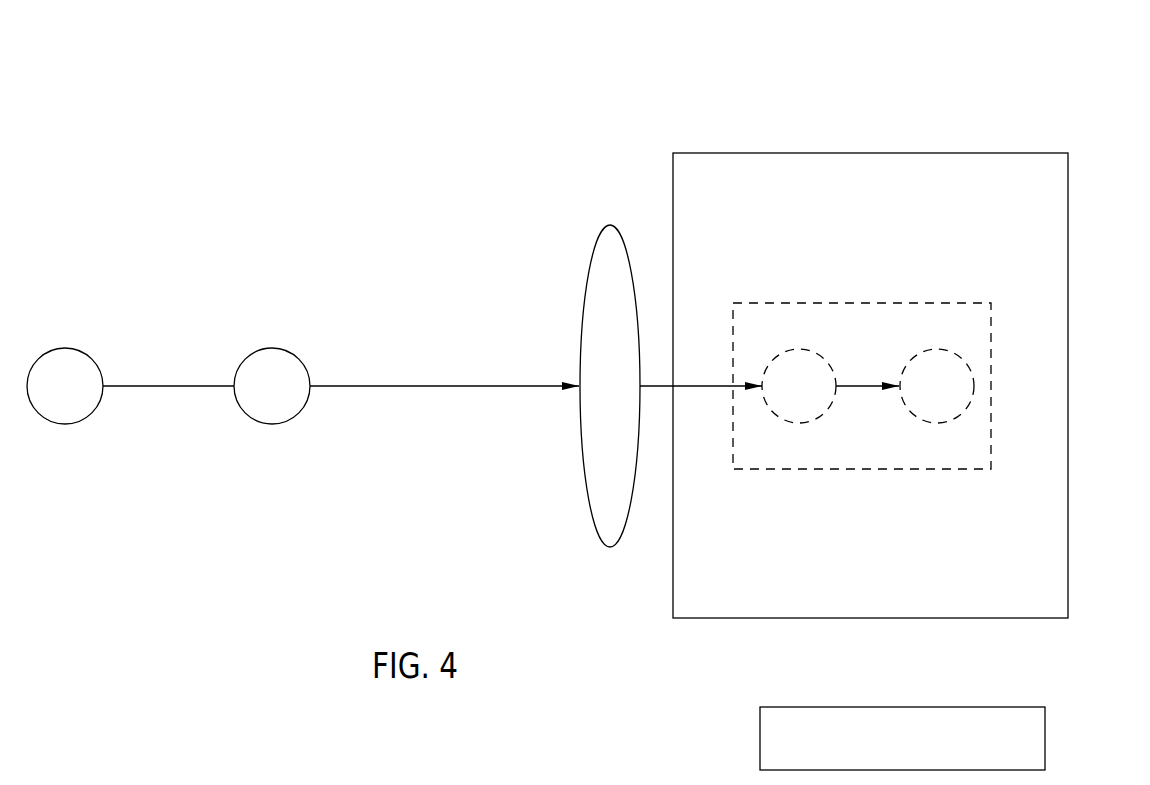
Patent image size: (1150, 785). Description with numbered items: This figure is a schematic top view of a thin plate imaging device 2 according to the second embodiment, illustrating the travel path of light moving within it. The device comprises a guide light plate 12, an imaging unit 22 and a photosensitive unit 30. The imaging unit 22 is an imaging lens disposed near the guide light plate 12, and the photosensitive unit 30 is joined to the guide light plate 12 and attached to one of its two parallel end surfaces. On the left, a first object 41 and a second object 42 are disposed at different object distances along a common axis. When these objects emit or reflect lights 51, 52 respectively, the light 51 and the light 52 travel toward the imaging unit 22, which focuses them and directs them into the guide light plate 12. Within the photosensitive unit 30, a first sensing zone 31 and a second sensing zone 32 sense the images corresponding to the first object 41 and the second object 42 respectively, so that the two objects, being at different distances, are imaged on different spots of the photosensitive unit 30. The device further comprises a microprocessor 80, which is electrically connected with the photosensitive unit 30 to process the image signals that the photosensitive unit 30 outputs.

The thin plate imaging device 2 is at (865, 128).
The guide light plate 12 is at (720, 177).
The imaging unit 22 is at (613, 515).
The photosensitive unit 30 is at (870, 445).
The first sensing zone 31 is at (783, 395).
The second sensing zone 32 is at (935, 395).
The first object 41 is at (62, 408).
The second object 42 is at (275, 408).
The light 51 is at (162, 387).
The light 52 is at (417, 387).
The microprocessor 80 is at (1038, 724).